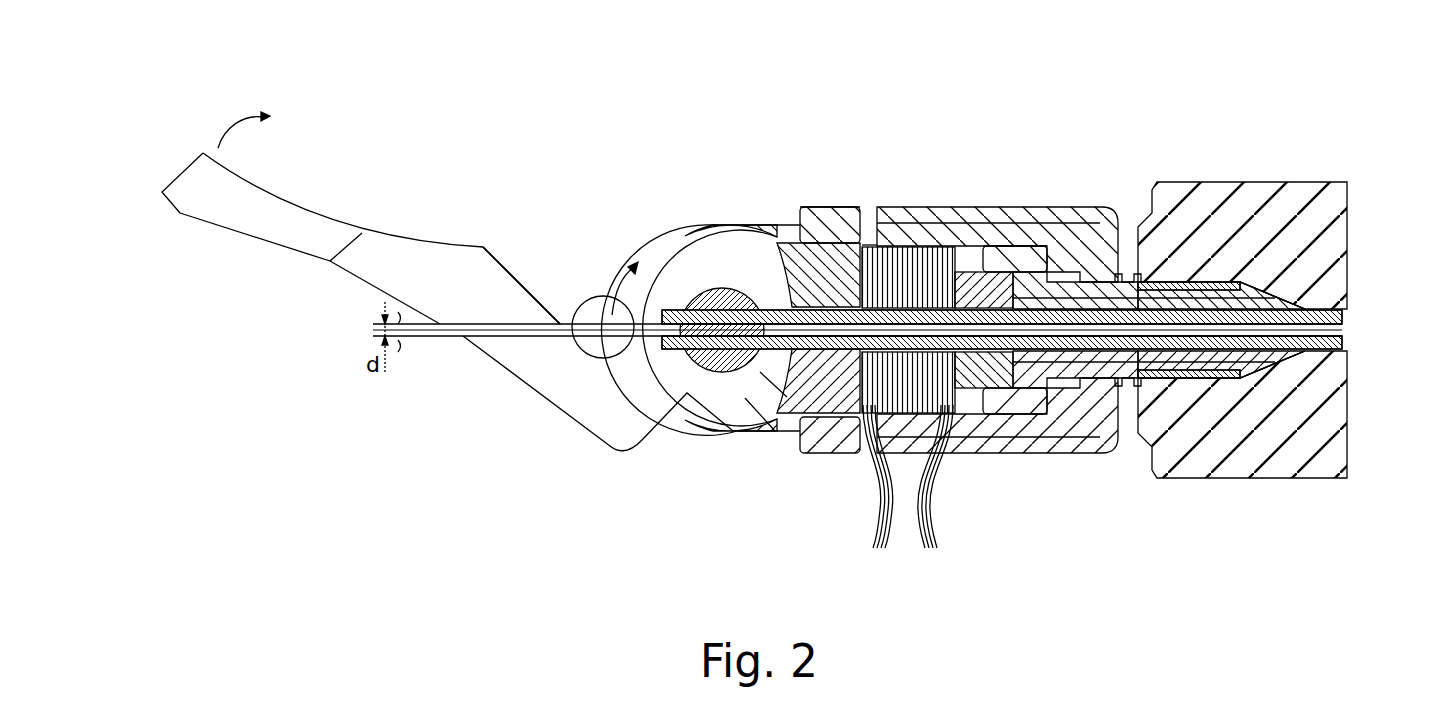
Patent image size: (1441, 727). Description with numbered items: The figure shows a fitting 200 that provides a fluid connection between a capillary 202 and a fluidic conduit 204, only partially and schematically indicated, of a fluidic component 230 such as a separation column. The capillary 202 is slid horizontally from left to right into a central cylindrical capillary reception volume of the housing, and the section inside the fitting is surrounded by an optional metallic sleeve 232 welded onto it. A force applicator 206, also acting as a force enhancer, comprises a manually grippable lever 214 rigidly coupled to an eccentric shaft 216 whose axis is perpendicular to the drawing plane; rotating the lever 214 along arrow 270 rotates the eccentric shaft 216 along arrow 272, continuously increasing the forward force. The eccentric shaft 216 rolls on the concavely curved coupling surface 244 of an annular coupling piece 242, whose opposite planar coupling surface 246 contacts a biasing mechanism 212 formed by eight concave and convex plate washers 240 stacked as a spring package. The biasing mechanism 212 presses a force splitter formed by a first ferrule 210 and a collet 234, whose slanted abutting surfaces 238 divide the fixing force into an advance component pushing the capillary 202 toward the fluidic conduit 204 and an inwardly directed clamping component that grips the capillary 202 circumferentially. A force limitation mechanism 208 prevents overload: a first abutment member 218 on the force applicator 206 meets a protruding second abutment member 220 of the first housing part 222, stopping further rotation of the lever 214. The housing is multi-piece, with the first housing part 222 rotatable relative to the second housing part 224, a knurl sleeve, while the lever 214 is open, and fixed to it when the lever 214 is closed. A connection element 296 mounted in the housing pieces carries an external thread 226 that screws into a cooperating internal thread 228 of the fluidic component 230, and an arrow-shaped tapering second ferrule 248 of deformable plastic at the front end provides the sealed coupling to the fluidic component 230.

The fitting 200 is at (327, 138).
The capillary 202 is at (672, 400).
The fluidic conduit 204 is at (1345, 333).
The force applicator 206 is at (403, 230).
The force limitation mechanism 208 is at (492, 241).
The first ferrule 210 is at (1000, 432).
The biasing mechanism 212 is at (905, 258).
The lever 214 is at (170, 202).
The eccentric shaft 216 is at (690, 268).
The first abutment member 218 is at (527, 283).
The second abutment member 220 is at (860, 220).
The first housing part 222 is at (803, 212).
The second housing part 224 is at (1053, 218).
The external thread 226 is at (1190, 298).
The internal thread 228 is at (1210, 292).
The fluidic component 230 is at (1247, 250).
The sleeve 232 is at (740, 413).
The collet 234 is at (1062, 405).
The abutting surfaces 238 is at (992, 265).
The plate washers 240 is at (909, 491).
The coupling piece 242 is at (803, 455).
The curved coupling surface 244 is at (780, 262).
The planar coupling surface 246 is at (840, 222).
The second ferrule 248 is at (1250, 378).
The arrow 270 is at (218, 142).
The arrow 272 is at (600, 356).
The connection element 296 is at (1022, 242).